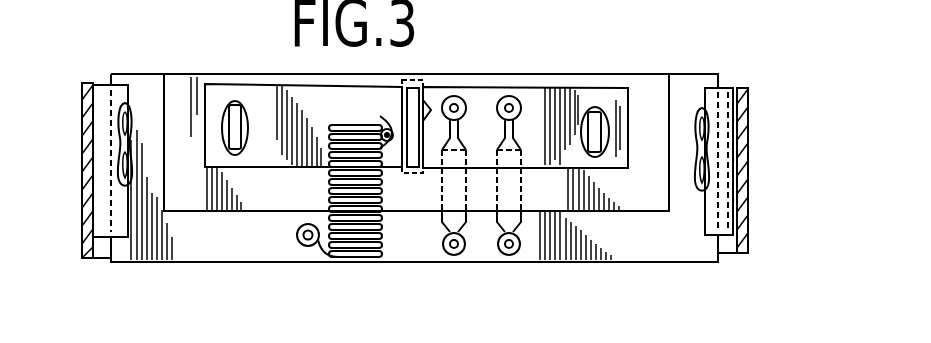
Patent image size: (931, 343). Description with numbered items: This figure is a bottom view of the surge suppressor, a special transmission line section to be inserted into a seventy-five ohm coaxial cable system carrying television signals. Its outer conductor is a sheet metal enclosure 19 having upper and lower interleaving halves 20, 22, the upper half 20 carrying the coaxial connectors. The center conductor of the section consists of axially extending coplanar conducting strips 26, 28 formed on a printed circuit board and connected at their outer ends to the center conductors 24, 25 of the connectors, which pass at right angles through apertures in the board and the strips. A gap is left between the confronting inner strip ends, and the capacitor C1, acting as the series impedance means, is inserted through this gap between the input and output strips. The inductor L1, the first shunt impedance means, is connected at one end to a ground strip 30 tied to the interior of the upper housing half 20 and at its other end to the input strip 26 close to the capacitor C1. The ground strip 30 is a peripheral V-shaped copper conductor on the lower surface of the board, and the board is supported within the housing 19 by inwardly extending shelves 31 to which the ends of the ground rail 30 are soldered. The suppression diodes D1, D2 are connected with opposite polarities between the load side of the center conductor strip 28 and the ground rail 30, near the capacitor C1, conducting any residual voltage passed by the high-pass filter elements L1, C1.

The sheet metal enclosure 19 is at (118, 66).
The upper housing half 20 is at (726, 88).
The lower housing half 22 is at (749, 153).
The center conductor 24 is at (222, 118).
The center conductor 25 is at (593, 104).
The conducting strip 26 is at (566, 102).
The conducting strip 28 is at (251, 100).
The ground strip 30 is at (226, 263).
The shelves 31 is at (128, 228).
The capacitor C1 is at (409, 100).
The suppression diode D1 is at (467, 163).
The suppression diode D2 is at (521, 160).
The inductor L1 is at (383, 223).